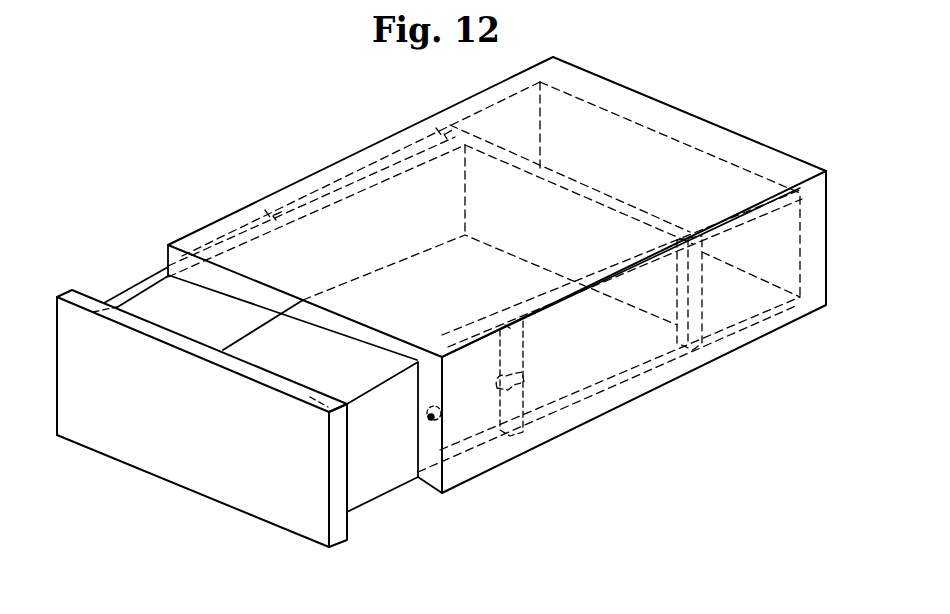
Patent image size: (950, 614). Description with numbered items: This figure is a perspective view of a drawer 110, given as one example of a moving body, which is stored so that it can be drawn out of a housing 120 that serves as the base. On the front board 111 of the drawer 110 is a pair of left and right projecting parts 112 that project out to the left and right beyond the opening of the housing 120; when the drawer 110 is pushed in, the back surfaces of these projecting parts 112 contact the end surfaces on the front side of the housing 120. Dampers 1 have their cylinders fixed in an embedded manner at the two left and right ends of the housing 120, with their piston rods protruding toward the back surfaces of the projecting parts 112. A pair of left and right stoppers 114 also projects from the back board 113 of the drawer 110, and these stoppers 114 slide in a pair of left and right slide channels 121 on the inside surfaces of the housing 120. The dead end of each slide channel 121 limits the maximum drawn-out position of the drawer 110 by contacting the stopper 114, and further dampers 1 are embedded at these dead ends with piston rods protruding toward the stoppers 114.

The damper 1 is at (431, 423).
The drawer 110 is at (410, 316).
The front board 111 is at (137, 438).
The projecting part 112 is at (68, 295).
The back board 113 is at (618, 200).
The stopper 114 is at (703, 253).
The housing 120 is at (818, 247).
The slide channel 121 is at (600, 350).